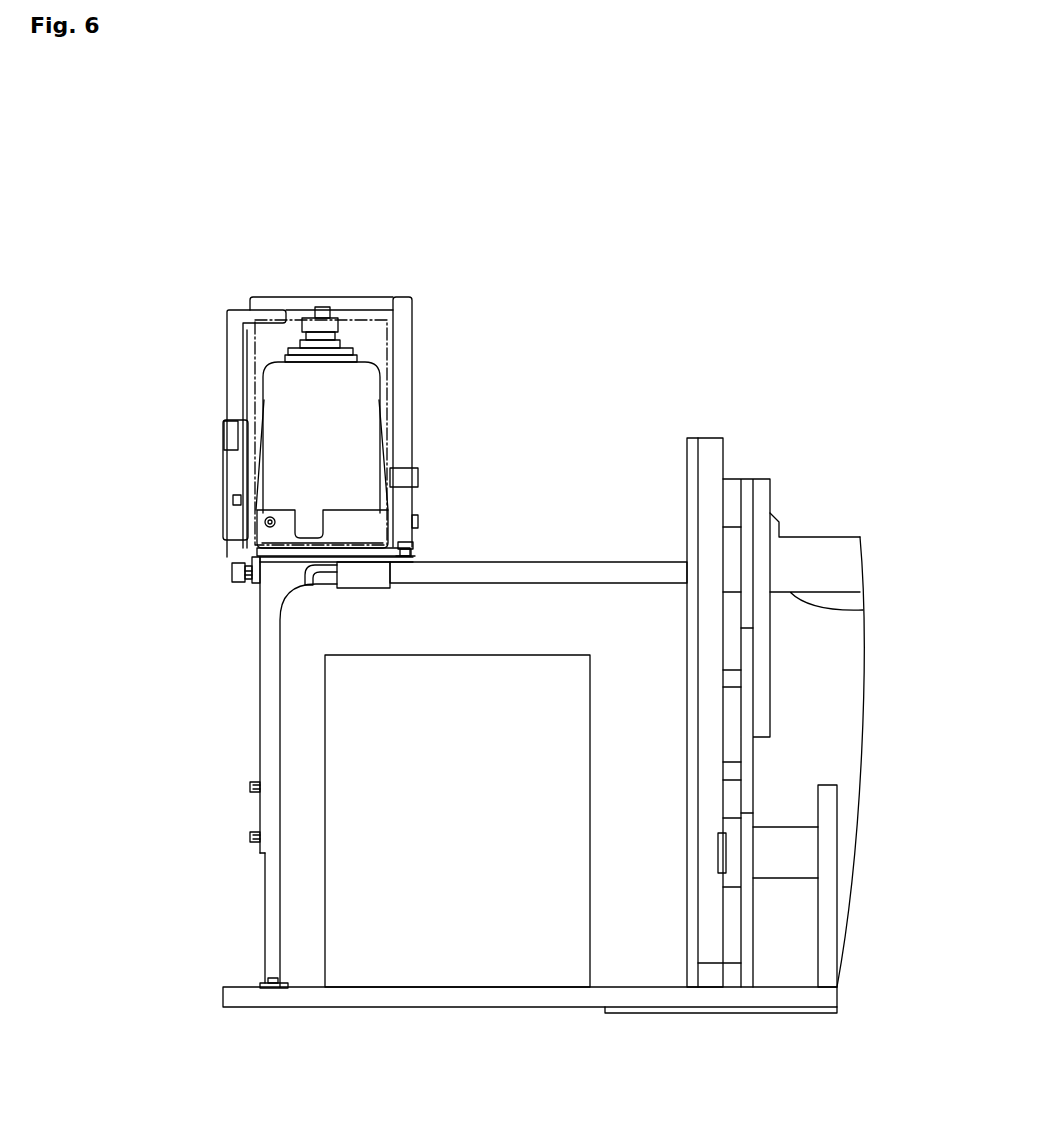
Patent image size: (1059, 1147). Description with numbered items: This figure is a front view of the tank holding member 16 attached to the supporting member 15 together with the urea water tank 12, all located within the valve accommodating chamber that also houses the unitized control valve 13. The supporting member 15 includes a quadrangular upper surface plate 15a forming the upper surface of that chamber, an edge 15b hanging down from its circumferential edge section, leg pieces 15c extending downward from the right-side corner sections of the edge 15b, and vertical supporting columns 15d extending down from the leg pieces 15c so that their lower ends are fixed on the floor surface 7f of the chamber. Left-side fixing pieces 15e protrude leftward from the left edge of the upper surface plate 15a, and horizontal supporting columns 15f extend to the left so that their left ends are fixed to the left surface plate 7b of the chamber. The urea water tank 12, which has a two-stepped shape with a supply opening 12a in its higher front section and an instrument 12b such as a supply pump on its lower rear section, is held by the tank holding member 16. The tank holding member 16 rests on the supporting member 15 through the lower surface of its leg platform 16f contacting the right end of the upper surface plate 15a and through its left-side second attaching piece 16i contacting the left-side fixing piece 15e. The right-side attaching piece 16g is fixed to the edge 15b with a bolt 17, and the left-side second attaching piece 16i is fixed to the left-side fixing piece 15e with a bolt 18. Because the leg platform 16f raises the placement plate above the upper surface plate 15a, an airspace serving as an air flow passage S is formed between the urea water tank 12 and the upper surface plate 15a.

The left surface plate 7b is at (693, 740).
The floor surface 7f is at (400, 990).
The urea water tank 12 is at (327, 387).
The supply opening 12a is at (319, 323).
The instrument 12b is at (370, 339).
The control valve 13 is at (527, 703).
The supporting member 15 is at (268, 688).
The upper surface plate 15a is at (345, 547).
The edge 15b is at (252, 582).
The leg piece 15c is at (268, 740).
The vertical supporting column 15d is at (275, 905).
The left-side fixing piece 15e is at (398, 570).
The horizontal supporting column 15f is at (555, 570).
The tank holding member 16 is at (227, 356).
The leg platform 16f is at (279, 547).
The right-side attaching piece 16g is at (250, 545).
The left-side second attaching piece 16i is at (413, 547).
The bolt 17 is at (232, 573).
The bolt 18 is at (402, 543).
The air flow passage S is at (312, 550).